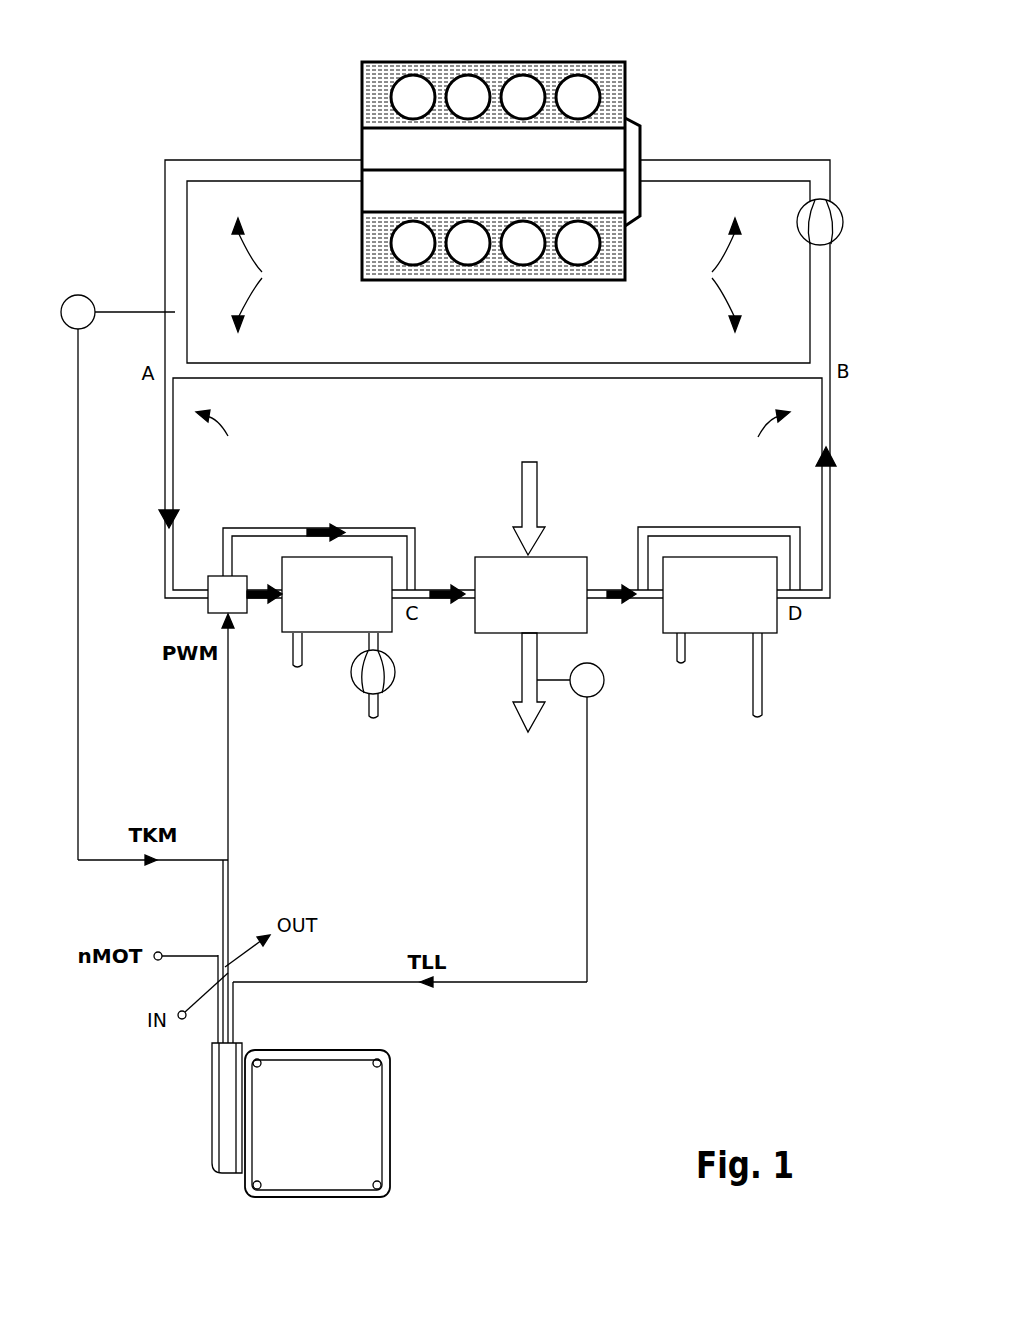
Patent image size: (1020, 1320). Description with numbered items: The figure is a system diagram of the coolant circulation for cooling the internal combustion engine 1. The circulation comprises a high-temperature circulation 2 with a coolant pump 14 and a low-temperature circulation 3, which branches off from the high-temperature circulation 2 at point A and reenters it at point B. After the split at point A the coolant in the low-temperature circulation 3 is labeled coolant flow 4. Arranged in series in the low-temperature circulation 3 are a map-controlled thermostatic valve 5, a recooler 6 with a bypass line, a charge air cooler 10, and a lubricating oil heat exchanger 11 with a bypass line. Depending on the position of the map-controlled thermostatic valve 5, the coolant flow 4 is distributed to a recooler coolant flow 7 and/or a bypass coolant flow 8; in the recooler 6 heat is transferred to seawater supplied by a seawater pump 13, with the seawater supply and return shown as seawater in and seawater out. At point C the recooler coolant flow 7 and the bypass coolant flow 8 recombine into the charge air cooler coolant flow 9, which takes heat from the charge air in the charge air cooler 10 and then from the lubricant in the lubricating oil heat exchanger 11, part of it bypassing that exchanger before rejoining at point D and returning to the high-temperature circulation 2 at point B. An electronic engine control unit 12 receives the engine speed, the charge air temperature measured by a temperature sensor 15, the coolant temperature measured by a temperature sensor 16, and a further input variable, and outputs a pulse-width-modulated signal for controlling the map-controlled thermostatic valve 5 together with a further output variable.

The internal combustion engine 1 is at (612, 78).
The high-temperature circulation 2 is at (486, 275).
The low-temperature circulation 3 is at (493, 436).
The coolant flow 4 is at (166, 498).
The map-controlled thermostatic valve 5 is at (227, 594).
The recooler 6 is at (324, 625).
The recooler coolant flow 7 is at (258, 585).
The bypass coolant flow 8 is at (327, 523).
The charge air cooler coolant flow 9 is at (438, 590).
The charge air cooler 10 is at (531, 597).
The lubricating oil heat exchanger 11 is at (714, 651).
The electronic engine control unit 12 is at (301, 1120).
The seawater pump 13 is at (396, 673).
The coolant pump 14 is at (840, 202).
The temperature sensor 15 is at (600, 692).
The temperature sensor 16 is at (82, 296).